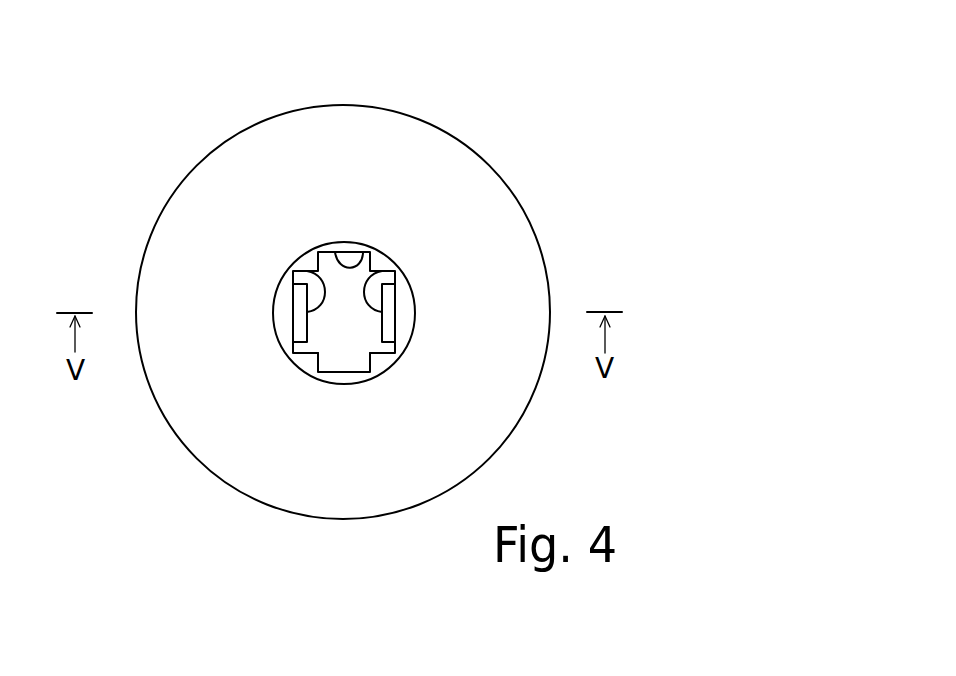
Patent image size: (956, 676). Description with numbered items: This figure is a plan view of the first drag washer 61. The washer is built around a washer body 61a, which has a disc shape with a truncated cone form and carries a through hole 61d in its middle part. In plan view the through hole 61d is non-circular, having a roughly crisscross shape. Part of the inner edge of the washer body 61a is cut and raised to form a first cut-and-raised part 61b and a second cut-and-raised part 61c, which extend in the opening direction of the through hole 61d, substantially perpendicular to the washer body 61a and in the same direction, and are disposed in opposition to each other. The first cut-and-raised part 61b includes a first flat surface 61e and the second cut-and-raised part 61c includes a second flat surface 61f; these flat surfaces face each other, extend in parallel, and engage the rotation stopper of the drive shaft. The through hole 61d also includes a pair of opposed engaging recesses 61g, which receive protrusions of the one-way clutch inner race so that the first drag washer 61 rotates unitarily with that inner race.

The first drag washer 61 is at (538, 120).
The washer body 61a is at (512, 212).
The first cut-and-raised part 61b is at (298, 318).
The second cut-and-raised part 61c is at (387, 313).
The through hole 61d is at (328, 369).
The first flat surface 61e is at (307, 271).
The second flat surface 61f is at (385, 271).
The engaging recess 61g is at (363, 252).